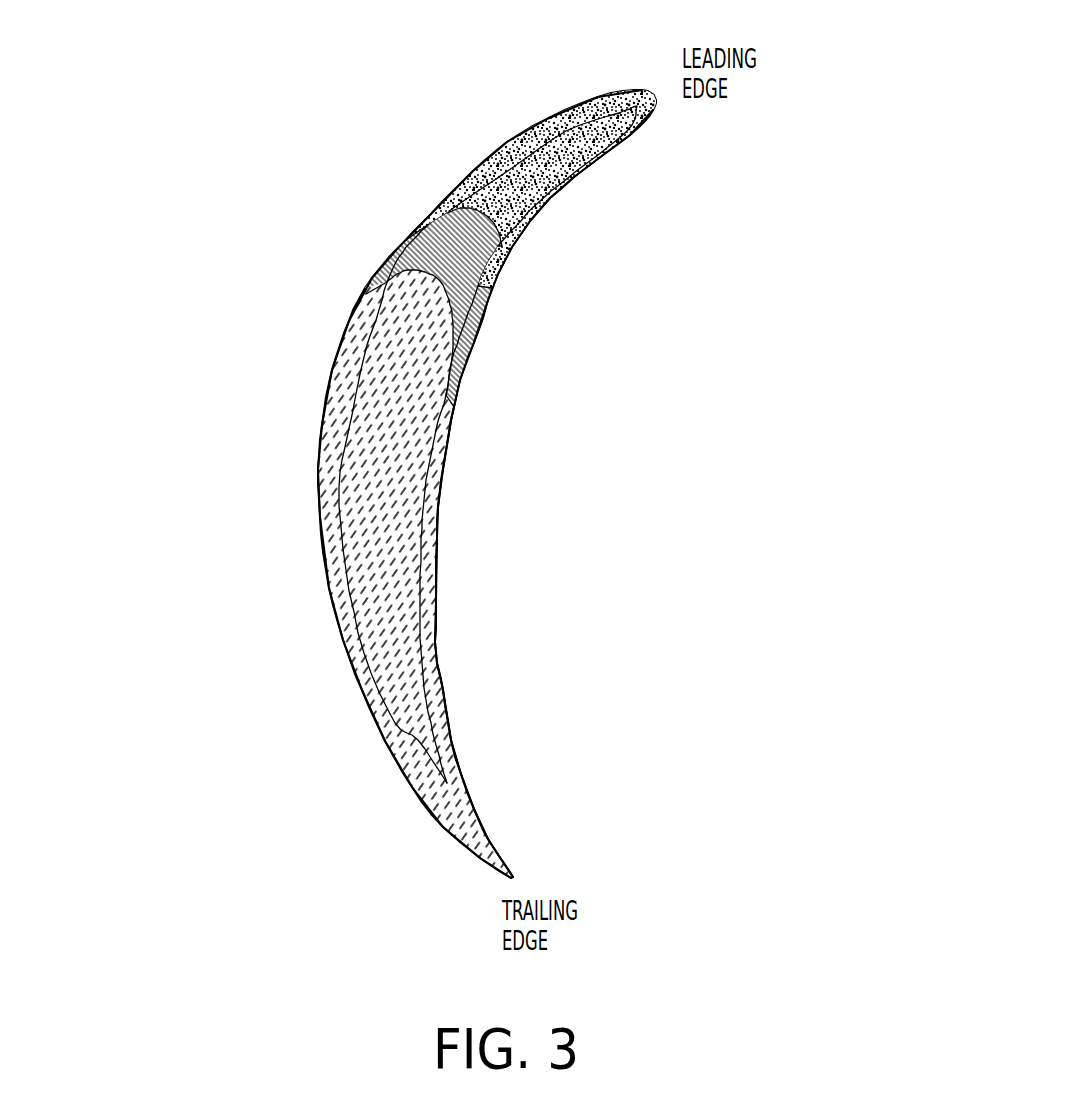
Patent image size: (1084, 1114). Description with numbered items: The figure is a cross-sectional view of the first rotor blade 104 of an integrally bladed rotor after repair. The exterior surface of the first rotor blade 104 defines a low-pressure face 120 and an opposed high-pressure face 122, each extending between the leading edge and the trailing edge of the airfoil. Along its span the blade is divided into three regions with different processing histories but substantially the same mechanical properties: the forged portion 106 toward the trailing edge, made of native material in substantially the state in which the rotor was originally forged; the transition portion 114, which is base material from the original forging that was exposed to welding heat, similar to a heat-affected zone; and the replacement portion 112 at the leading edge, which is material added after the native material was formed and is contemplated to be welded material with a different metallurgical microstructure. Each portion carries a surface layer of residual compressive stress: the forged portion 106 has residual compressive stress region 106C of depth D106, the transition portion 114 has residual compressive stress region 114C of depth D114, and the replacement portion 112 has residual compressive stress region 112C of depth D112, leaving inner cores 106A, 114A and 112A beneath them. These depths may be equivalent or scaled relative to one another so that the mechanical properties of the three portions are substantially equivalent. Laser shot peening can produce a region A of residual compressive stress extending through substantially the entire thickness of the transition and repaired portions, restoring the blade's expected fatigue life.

The first rotor blade 104 is at (350, 813).
The forged portion 106 is at (308, 624).
The first layer core 106A is at (387, 583).
The residual compressive stress region of the forged portion 106C is at (430, 665).
The replacement portion 112 is at (514, 107).
The leading edge layer core 112A is at (563, 157).
The residual compressive stress region of the replacement portion 112C is at (605, 174).
The transition portion 114 is at (342, 262).
The intermediate layer core 114A is at (472, 252).
The residual compressive stress region of the transition portion 114C is at (465, 340).
The low-pressure face 120 is at (333, 387).
The high-pressure face 122 is at (450, 424).
The region of residual compressive stress A is at (662, 139).
The depth of residual compressive stress region of the replacement portion D112 is at (513, 183).
The depth of residual compressive stress region of the transition portion D114 is at (453, 265).
The depth of residual compressive stress region of the forged portion D106 is at (360, 478).